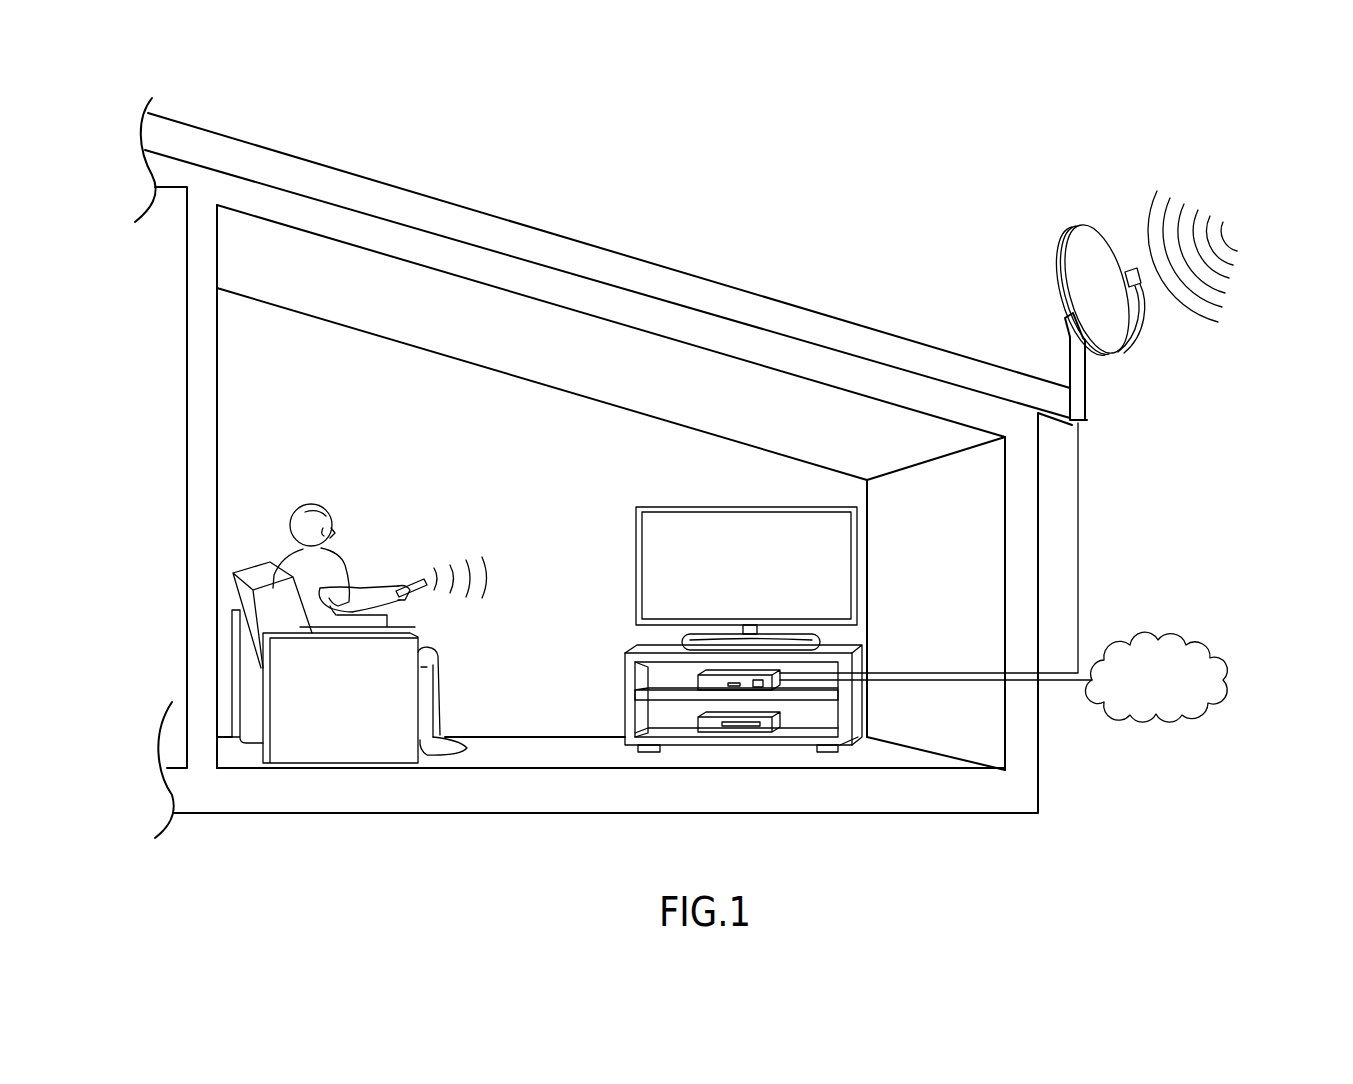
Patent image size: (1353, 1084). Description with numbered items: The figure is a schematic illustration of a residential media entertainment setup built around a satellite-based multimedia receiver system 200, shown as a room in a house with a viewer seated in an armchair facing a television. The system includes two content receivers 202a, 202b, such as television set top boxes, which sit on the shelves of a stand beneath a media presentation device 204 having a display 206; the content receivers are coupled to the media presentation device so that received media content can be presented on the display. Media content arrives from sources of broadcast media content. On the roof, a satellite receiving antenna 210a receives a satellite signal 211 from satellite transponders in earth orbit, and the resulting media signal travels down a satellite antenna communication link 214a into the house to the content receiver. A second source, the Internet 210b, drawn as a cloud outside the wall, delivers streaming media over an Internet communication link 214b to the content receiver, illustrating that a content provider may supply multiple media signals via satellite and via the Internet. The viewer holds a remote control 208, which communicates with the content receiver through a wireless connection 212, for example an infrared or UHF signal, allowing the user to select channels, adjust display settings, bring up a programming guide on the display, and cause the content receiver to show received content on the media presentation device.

The satellite-based multimedia receiver system 200 is at (994, 129).
The content receiver 202a is at (697, 677).
The content receiver 202b is at (697, 718).
The media presentation device 204 is at (737, 555).
The display 206 is at (758, 527).
The remote control 208 is at (412, 578).
The satellite receiving antenna 210a is at (1088, 250).
The Internet 210b is at (1143, 635).
The satellite signal 211 is at (1211, 199).
The wireless connection 212 is at (491, 570).
The satellite antenna communication link 214a is at (1080, 530).
The Internet communication link 214b is at (1066, 683).